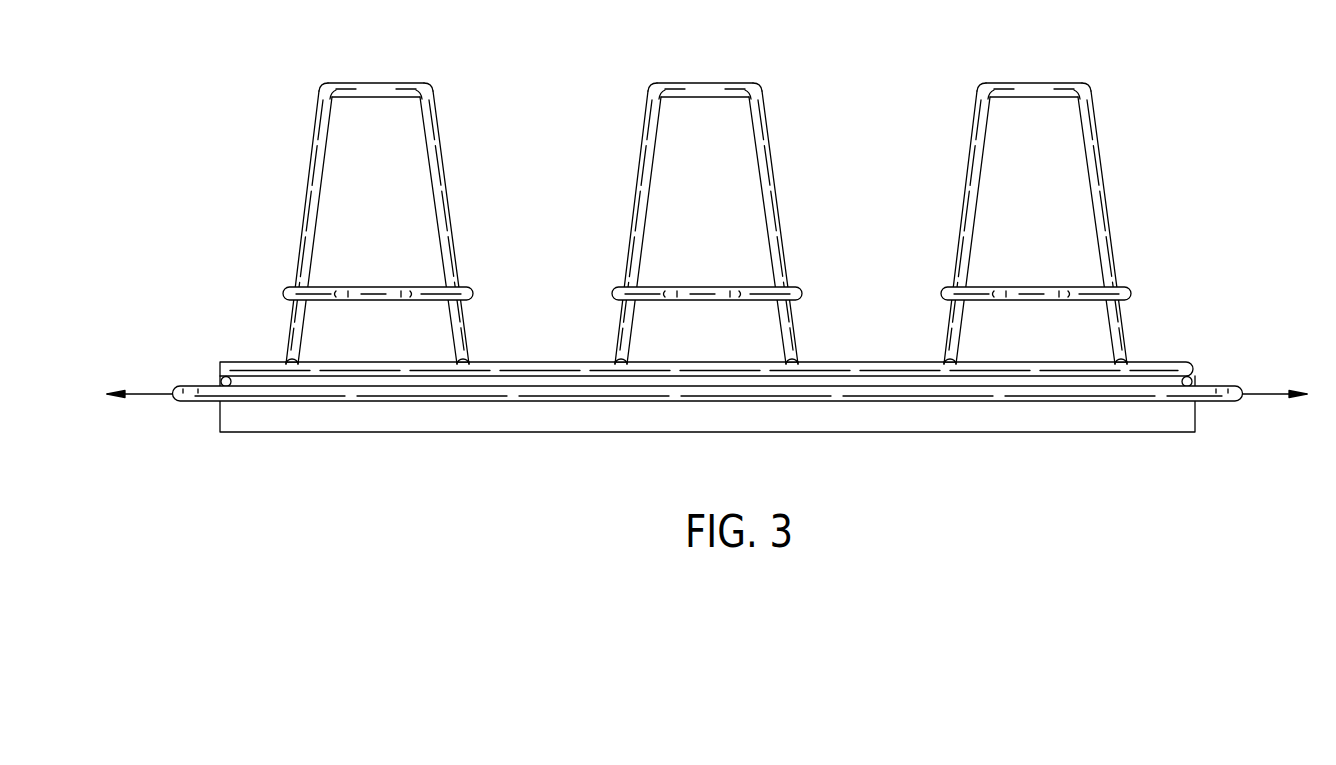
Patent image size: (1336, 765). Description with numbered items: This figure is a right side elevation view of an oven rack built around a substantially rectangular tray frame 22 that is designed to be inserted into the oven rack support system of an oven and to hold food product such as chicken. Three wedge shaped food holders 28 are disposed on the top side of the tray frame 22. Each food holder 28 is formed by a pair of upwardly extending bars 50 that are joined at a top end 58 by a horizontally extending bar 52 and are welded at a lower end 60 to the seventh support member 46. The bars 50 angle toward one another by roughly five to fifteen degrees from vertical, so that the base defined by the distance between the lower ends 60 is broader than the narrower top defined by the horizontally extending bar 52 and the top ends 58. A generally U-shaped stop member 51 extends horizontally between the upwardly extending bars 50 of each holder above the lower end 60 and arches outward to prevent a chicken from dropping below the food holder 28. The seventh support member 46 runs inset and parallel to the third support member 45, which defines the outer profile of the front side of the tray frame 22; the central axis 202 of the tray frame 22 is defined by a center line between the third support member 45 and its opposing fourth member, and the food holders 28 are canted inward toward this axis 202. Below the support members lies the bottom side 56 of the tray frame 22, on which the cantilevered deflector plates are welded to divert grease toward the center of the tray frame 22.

The tray frame 22 is at (233, 112).
The food holder 28 is at (441, 164).
The third support member 45 is at (285, 402).
The seventh support member 46 is at (1176, 370).
The upwardly extending bars 50 is at (434, 210).
The U-shaped stop member 51 is at (328, 286).
The horizontally extending bar 52 is at (392, 91).
The bottom side 56 is at (441, 468).
The top end 58 is at (322, 91).
The lower end 60 is at (286, 364).
The axis 202 is at (142, 393).